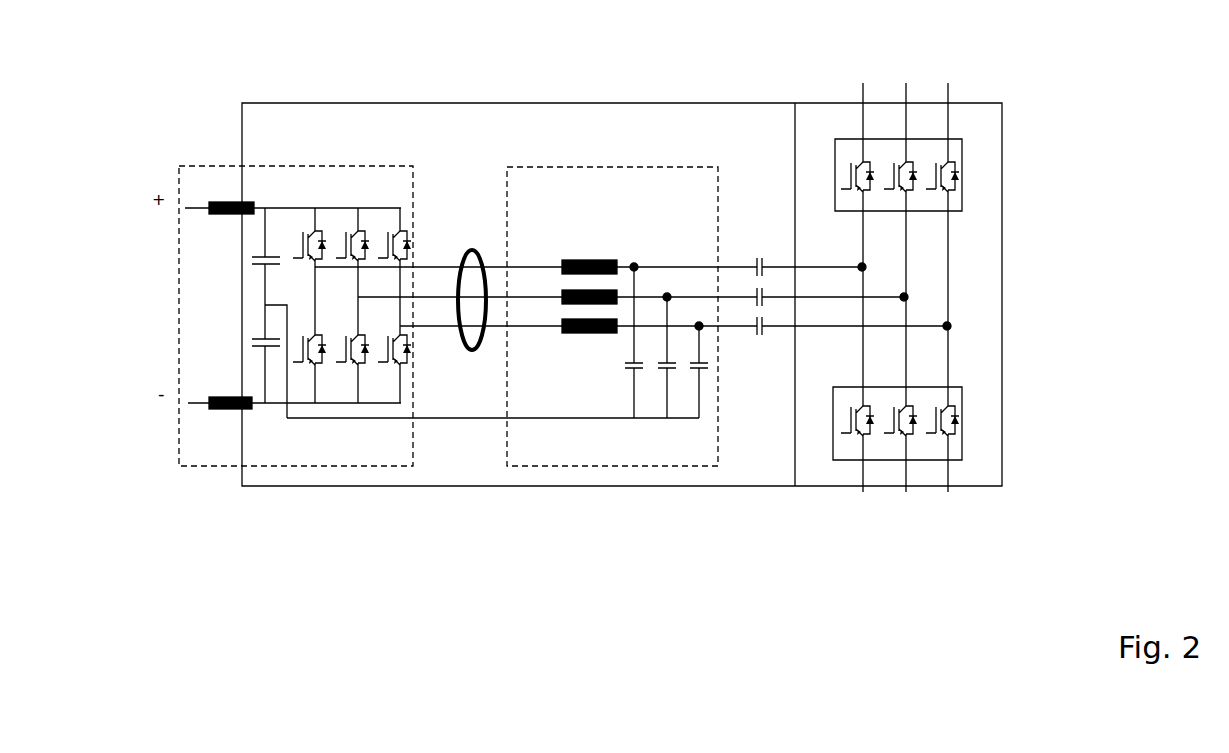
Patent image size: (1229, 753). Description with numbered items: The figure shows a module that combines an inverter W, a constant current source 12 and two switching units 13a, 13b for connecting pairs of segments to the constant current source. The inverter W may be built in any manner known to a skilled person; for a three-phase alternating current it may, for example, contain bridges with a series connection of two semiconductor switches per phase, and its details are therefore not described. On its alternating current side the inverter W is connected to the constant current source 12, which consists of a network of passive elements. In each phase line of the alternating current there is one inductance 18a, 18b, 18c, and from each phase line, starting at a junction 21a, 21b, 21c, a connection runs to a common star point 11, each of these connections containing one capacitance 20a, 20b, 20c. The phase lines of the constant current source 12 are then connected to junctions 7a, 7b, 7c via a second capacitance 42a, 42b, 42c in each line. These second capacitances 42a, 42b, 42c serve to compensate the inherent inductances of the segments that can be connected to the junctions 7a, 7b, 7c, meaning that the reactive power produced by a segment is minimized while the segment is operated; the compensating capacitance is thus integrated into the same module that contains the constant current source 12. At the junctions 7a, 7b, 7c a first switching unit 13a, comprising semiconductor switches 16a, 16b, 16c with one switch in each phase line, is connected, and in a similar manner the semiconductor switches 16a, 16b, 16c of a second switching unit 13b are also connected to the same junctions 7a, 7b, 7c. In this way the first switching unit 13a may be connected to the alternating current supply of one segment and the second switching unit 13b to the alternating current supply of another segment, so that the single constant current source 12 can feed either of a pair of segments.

The inverter W is at (206, 166).
The constant current source 12 is at (537, 167).
The inductance 18a is at (577, 334).
The inductance 18b is at (562, 304).
The inductance 18c is at (565, 260).
The junction 21a is at (700, 325).
The junction 21b is at (667, 296).
The junction 21c is at (634, 266).
The capacitance 20a is at (700, 368).
The capacitance 20b is at (668, 368).
The capacitance 20c is at (630, 368).
The common star point 11 is at (642, 418).
The second capacitance 42a is at (764, 336).
The second capacitance 42b is at (762, 288).
The second capacitance 42c is at (757, 267).
The junction 7a is at (947, 326).
The junction 7b is at (904, 297).
The junction 7c is at (862, 267).
The semiconductor switch 16a is at (942, 167).
The semiconductor switch 16b is at (897, 163).
The semiconductor switch 16c is at (856, 167).
The first switching unit 13a is at (962, 170).
The second switching unit 13b is at (962, 400).